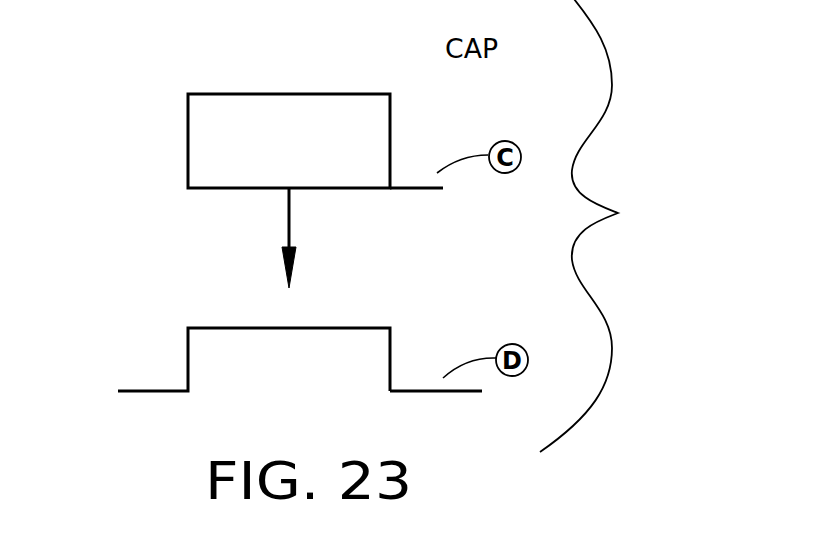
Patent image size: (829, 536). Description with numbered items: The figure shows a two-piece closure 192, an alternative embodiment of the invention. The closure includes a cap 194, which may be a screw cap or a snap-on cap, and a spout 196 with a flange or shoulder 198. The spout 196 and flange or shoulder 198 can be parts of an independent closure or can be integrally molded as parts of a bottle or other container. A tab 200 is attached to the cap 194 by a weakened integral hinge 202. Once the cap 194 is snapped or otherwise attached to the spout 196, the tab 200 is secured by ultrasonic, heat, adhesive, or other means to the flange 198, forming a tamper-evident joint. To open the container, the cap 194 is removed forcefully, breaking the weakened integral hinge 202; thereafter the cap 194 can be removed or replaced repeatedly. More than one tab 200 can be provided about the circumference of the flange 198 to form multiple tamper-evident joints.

The two-piece closure 192 is at (616, 226).
The cap 194 is at (188, 142).
The spout 196 is at (188, 370).
The flange or shoulder 198 is at (415, 390).
The tab 200 is at (413, 186).
The weakened integral hinge 202 is at (397, 190).